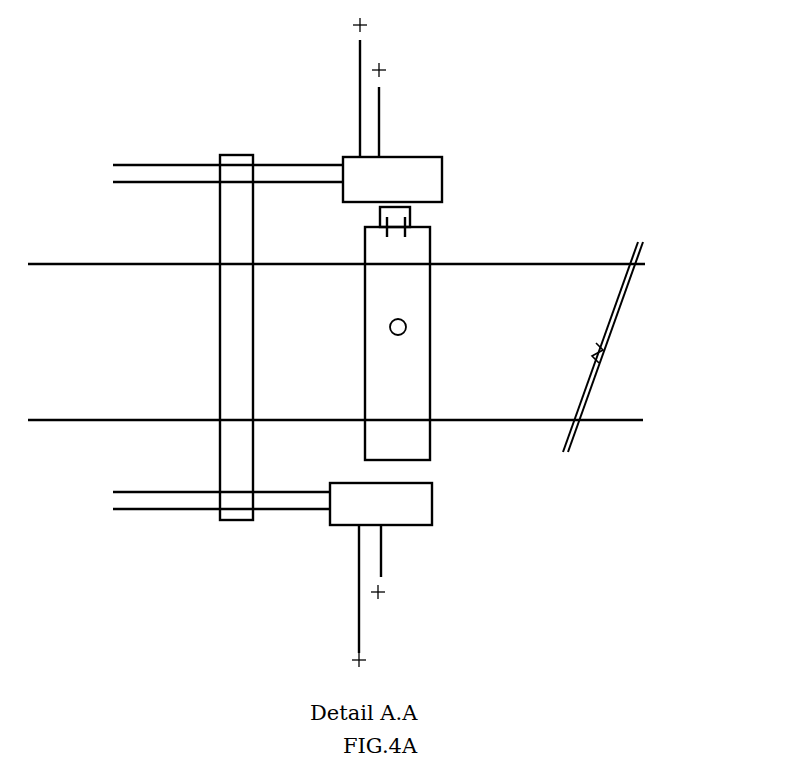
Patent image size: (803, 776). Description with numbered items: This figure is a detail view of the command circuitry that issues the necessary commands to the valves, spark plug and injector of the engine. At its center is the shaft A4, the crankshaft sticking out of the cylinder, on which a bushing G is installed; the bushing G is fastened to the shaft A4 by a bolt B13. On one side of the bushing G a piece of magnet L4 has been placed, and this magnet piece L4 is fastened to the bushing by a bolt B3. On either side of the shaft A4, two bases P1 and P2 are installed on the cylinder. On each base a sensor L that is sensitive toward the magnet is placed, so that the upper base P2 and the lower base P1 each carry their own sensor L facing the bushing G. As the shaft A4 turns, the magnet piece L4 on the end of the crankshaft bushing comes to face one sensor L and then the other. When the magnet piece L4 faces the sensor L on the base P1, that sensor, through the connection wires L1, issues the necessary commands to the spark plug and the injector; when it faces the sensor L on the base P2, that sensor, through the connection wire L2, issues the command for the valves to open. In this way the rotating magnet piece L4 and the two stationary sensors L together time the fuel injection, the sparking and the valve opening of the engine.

The shaft A4 is at (371, 374).
The base P2 is at (228, 125).
The base P1 is at (221, 544).
The sensor L is at (467, 330).
The connection wire L2 is at (414, 110).
The connection wires L1 is at (381, 558).
The magnet piece L4 is at (464, 203).
The bolt B3 is at (470, 239).
The bushing G is at (473, 343).
The bolt B13 is at (490, 408).